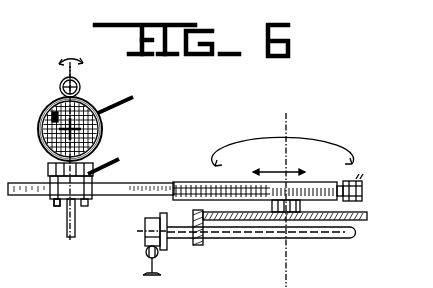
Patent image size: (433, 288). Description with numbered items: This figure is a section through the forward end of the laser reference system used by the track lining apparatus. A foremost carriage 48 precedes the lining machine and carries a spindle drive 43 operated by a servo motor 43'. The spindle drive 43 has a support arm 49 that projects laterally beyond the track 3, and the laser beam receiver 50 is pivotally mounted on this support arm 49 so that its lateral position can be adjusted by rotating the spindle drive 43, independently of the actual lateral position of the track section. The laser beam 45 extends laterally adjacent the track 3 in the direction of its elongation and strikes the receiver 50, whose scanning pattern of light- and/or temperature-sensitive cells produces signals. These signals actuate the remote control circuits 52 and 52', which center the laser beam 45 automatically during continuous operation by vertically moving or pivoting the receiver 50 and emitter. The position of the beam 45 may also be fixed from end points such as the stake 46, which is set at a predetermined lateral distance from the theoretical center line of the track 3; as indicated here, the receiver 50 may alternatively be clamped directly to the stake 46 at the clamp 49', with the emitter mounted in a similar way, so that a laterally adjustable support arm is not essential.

The track 3 is at (160, 269).
The spindle drive 43 is at (255, 177).
The servo motor 43' is at (337, 177).
The laser beam 45 is at (46, 113).
The end point (stake) 46 is at (69, 218).
The foremost carriage 48 is at (283, 214).
The support arm 49 is at (91, 207).
The clamp 49' is at (43, 213).
The laser beam receiver 50 is at (101, 134).
The remote control circuit 52 is at (115, 95).
The remote control circuit 52' is at (118, 170).